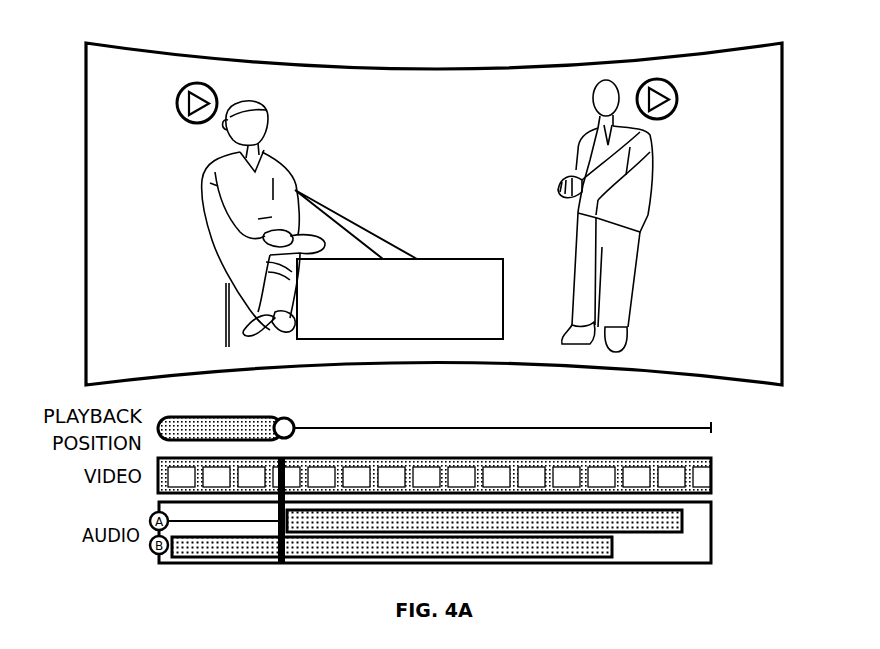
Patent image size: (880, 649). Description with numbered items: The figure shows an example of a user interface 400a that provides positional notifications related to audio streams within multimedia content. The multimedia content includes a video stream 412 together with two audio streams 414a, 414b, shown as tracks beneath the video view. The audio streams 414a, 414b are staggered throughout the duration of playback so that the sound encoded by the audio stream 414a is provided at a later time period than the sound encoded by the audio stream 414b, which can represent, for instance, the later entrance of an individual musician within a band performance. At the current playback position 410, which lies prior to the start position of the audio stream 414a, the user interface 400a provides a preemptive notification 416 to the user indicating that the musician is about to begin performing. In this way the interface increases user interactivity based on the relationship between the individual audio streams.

The user interface 400a is at (438, 70).
The preemptive notification 416 is at (440, 259).
The video stream 412 is at (712, 476).
The audio stream 414a is at (682, 522).
The audio stream 414b is at (614, 548).
The playback position 410 is at (283, 563).